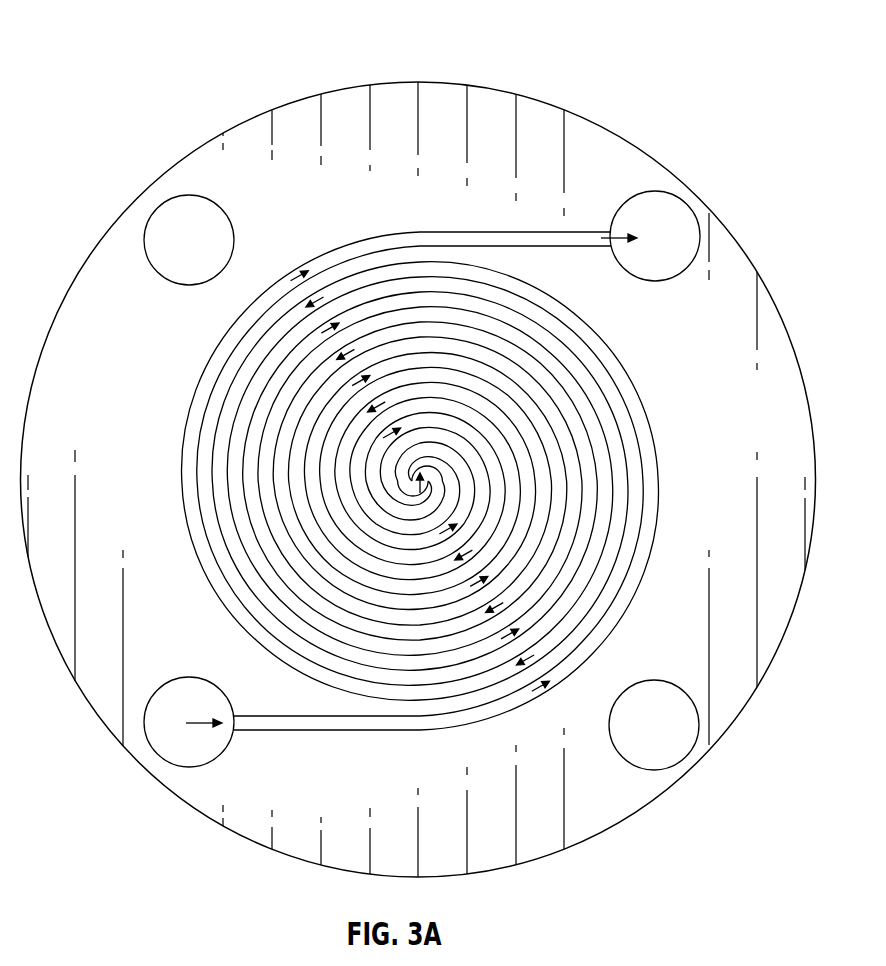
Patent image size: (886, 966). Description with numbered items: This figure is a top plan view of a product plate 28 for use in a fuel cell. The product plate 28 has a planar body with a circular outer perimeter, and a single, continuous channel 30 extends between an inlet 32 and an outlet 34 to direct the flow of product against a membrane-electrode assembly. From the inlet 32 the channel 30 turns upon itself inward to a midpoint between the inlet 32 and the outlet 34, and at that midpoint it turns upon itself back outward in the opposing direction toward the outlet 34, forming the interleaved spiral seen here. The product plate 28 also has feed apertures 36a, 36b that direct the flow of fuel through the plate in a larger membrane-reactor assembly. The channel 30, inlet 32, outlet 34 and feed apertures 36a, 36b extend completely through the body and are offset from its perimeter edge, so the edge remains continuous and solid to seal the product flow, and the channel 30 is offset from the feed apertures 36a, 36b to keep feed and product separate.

The product plate 28 is at (108, 50).
The channel 30 is at (333, 727).
The inlet 32 is at (186, 746).
The outlet 34 is at (657, 212).
The feed aperture 36a is at (185, 214).
The feed aperture 36b is at (667, 745).